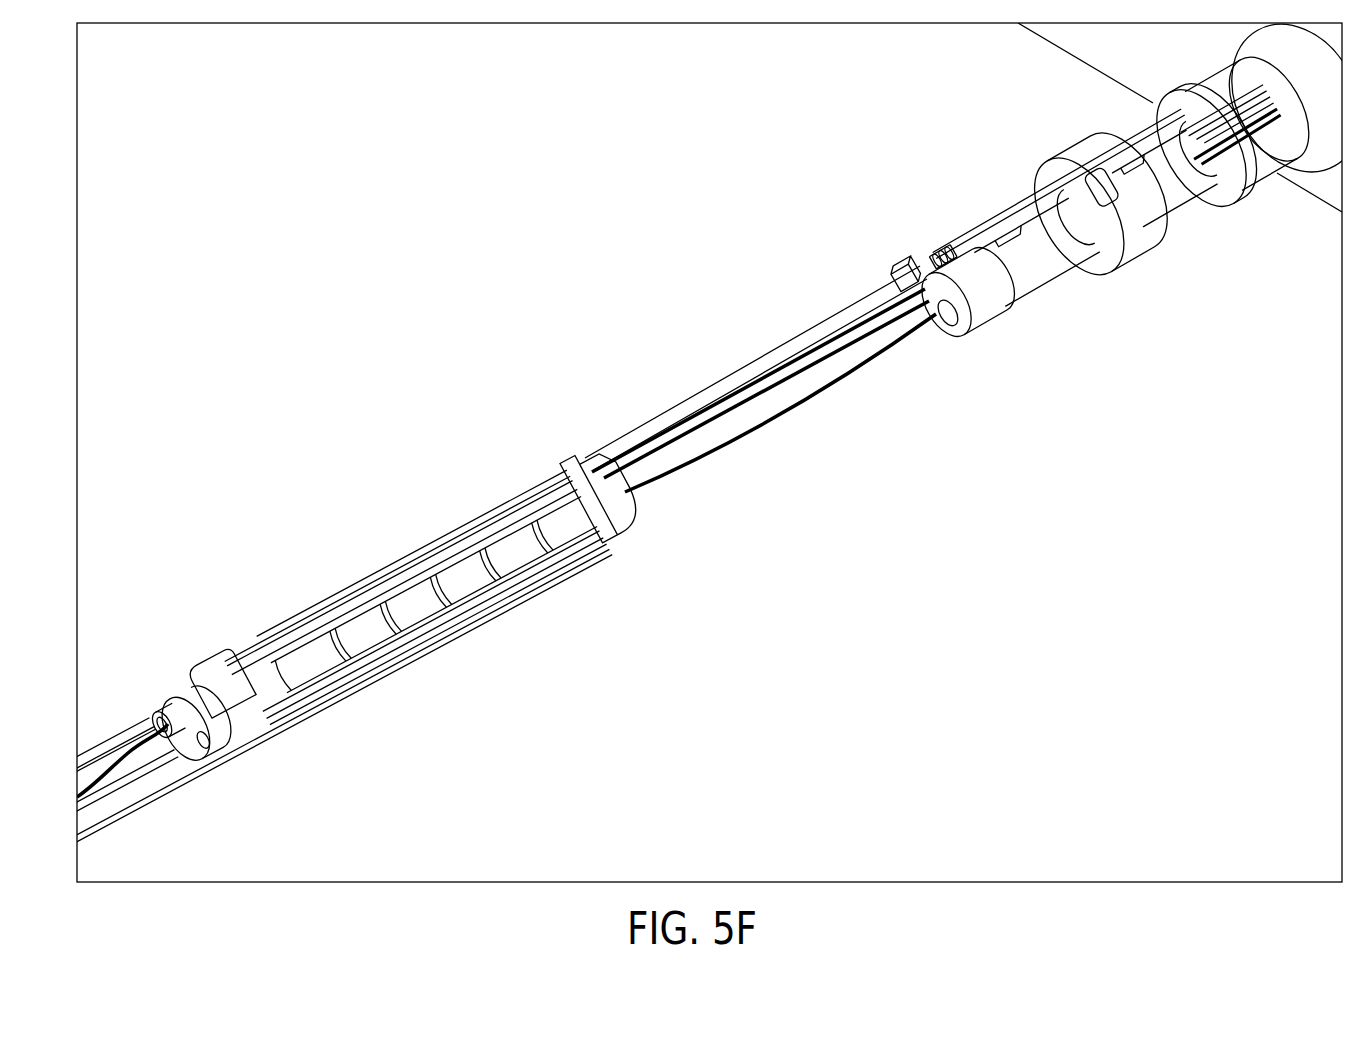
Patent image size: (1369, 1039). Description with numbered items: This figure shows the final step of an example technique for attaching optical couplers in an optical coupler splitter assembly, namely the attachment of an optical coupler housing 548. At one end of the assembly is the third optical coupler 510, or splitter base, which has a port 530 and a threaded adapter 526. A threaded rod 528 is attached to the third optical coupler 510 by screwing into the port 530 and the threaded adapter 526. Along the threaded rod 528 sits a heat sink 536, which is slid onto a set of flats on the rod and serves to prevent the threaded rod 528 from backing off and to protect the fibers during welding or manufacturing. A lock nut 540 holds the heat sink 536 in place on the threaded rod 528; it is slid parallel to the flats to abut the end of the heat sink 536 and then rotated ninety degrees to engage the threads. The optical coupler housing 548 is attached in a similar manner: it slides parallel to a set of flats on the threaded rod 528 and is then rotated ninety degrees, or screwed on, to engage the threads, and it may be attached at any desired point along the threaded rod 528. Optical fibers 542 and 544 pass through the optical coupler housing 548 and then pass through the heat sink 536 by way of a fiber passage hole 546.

The third optical coupler 510 is at (1068, 57).
The threaded adapter 526 is at (1046, 160).
The threaded rod 528 is at (747, 370).
The port 530 is at (1310, 190).
The heat sink 536 is at (1053, 280).
The lock nut 540 is at (898, 270).
The optical fiber 542 is at (777, 417).
The optical fiber 544 is at (800, 373).
The fiber passage hole 546 is at (945, 320).
The optical coupler housing 548 is at (375, 570).